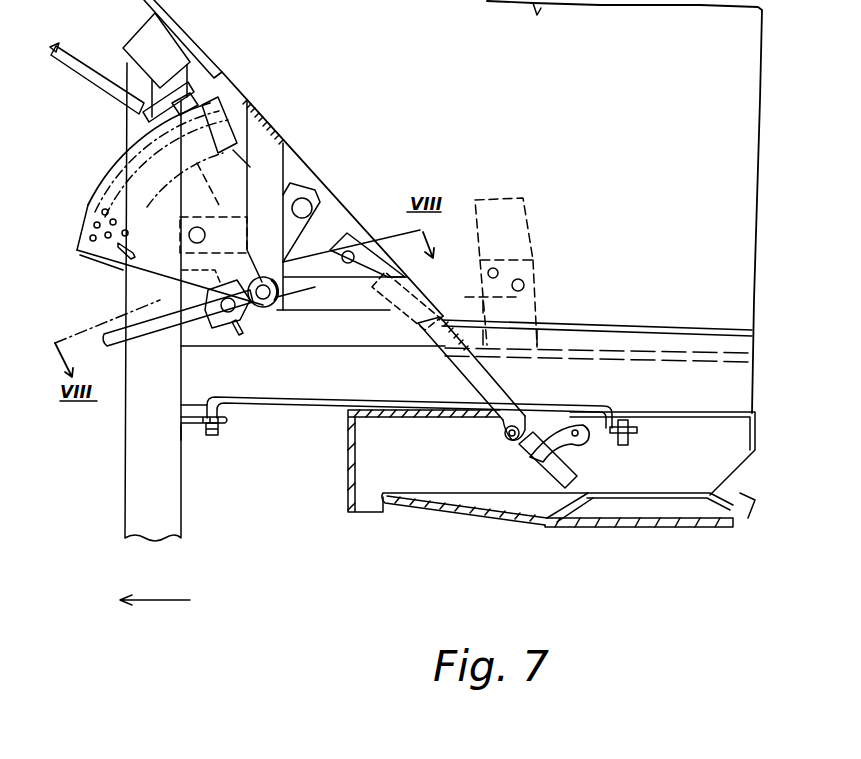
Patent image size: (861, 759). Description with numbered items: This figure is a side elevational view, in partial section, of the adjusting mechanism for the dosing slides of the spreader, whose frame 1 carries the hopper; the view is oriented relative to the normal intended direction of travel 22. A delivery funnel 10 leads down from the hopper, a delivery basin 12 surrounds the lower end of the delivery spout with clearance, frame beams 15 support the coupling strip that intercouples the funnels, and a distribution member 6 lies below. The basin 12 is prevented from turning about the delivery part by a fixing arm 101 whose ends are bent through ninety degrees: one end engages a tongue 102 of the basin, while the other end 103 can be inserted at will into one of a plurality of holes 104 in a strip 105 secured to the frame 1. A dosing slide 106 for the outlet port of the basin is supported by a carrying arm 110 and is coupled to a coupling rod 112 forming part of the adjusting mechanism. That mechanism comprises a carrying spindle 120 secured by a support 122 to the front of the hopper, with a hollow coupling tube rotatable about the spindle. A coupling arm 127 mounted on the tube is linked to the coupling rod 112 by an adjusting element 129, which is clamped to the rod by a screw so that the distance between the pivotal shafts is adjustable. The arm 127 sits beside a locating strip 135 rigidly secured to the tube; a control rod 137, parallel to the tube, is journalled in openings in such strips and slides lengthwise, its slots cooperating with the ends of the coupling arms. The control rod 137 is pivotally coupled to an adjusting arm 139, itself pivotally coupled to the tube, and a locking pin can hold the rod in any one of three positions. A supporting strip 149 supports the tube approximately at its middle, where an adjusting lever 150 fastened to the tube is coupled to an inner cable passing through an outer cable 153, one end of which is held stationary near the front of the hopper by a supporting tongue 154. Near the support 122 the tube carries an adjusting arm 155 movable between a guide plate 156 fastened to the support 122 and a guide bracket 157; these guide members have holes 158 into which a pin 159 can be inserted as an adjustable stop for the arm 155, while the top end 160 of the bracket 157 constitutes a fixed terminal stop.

The frame 1 is at (116, 434).
The distribution member 6 is at (450, 510).
The delivery funnel 10 is at (658, 330).
The delivery basin 12 is at (717, 427).
The frame beams 15 is at (303, 393).
The direction of travel 22 is at (185, 600).
The fixing arm 101 is at (262, 403).
The tongue 102 is at (637, 430).
The other end of arm 103 is at (213, 436).
The holes 104 is at (203, 427).
The strip 105 is at (180, 419).
The dosing slide 106 is at (513, 447).
The carrying arm 110 is at (563, 447).
The coupling rod 112 is at (453, 370).
The carrying spindle 120 is at (273, 307).
The support 122 is at (263, 157).
The coupling arm 127 is at (313, 262).
The adjusting element 129 is at (363, 237).
The locating strip 135 is at (270, 330).
The control rod 137 is at (215, 325).
The adjusting arm 139 is at (157, 300).
The supporting strip 149 is at (525, 250).
The adjusting lever 150 is at (315, 190).
The outer cable 153 is at (73, 52).
The supporting tongue 154 is at (147, 115).
The adjusting arm 155 is at (230, 97).
The guide plate 156 is at (117, 168).
The guide bracket 157 is at (90, 260).
The holes 158 is at (90, 205).
The pin 159 is at (133, 243).
The top end of bracket 160 is at (230, 107).